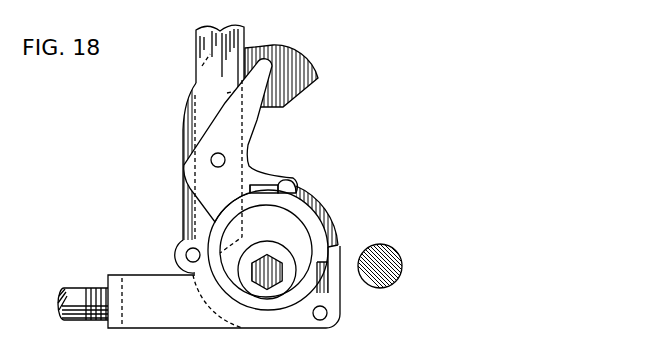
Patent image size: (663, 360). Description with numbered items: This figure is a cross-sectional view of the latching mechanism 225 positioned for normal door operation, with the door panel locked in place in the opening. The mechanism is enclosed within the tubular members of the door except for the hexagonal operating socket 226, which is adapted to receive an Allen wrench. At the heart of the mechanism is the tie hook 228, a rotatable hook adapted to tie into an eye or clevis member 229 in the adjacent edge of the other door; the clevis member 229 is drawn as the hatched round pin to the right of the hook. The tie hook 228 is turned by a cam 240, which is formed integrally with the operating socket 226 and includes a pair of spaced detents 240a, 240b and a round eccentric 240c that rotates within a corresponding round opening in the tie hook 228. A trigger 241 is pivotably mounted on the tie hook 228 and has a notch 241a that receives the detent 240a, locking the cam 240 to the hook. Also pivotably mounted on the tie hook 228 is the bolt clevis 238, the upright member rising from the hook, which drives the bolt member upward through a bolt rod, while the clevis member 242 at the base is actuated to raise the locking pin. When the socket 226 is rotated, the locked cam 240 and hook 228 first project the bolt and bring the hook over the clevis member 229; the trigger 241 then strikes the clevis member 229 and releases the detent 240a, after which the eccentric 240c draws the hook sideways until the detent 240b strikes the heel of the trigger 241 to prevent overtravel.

The latching mechanism 225 is at (391, 224).
The hexagonal operating socket 226 is at (275, 295).
The tie hook 228 is at (317, 80).
The clevis member 229 is at (400, 267).
The bolt clevis 238 is at (241, 36).
The cam 240 is at (292, 222).
The detent 240a is at (288, 187).
The detent 240b is at (330, 249).
The round eccentric 240c is at (310, 273).
The trigger 241 is at (208, 124).
The notch 241a is at (262, 184).
The clevis member 242 is at (178, 283).